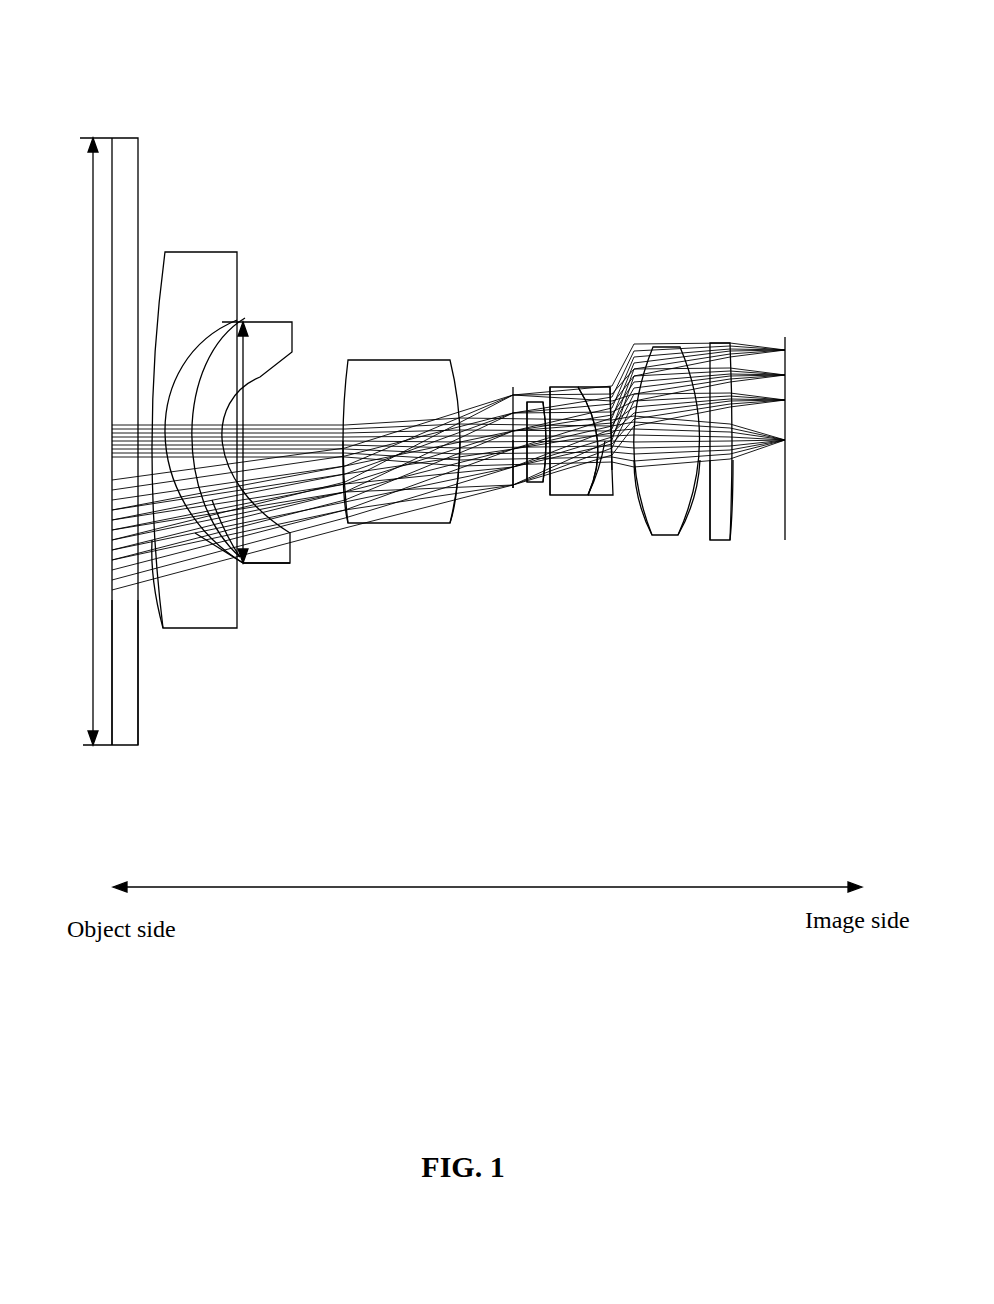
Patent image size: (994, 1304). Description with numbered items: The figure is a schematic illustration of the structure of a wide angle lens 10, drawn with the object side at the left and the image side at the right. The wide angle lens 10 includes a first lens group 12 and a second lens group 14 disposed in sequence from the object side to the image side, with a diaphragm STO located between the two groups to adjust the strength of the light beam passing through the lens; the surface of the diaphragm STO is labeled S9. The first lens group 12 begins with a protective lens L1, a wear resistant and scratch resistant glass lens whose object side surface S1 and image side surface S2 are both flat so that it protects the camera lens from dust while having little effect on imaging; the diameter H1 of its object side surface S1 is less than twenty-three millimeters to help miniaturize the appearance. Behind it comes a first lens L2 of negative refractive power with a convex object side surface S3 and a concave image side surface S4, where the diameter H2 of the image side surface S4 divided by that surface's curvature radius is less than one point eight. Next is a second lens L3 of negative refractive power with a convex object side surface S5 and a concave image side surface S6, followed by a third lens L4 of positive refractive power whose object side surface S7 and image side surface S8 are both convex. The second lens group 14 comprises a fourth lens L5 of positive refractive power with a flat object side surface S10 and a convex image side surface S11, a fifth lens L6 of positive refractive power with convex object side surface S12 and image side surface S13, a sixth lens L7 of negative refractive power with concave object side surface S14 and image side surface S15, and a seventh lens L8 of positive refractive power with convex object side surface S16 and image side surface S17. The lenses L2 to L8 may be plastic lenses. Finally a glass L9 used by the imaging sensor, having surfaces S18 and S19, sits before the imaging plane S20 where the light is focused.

The wide angle lens 10 is at (58, 92).
The first lens group 12 is at (343, 82).
The second lens group 14 is at (695, 150).
The protective lens L1 is at (115, 138).
The first lens L2 is at (197, 252).
The second lens L3 is at (263, 322).
The third lens L4 is at (389, 360).
The fourth lens L5 is at (527, 400).
The fifth lens L6 is at (563, 387).
The sixth lens L7 is at (597, 387).
The seventh lens L8 is at (665, 347).
The glass L9 is at (720, 343).
The diaphragm STO is at (513, 395).
The diameter of the object side surface of the protective lens H1 is at (80, 441).
The diameter of the image side surface of the first lens H2 is at (253, 442).
The object side surface of the protective lens S1 is at (112, 710).
The image side surface of the protective lens S2 is at (138, 662).
The object side surface of the first lens S3 is at (158, 555).
The image side surface of the first lens S4 is at (195, 533).
The object side surface of the second lens S5 is at (212, 500).
The image side surface of the second lens S6 is at (262, 563).
The object side surface of the third lens S7 is at (345, 473).
The image side surface of the third lens S8 is at (452, 520).
The surface of the diaphragm S9 is at (513, 488).
The object side surface of the fourth lens S10 is at (527, 440).
The image side surface of the fourth lens S11 is at (543, 465).
The object side surface of the fifth lens S12 is at (550, 495).
The image side surface of the fifth lens S13 is at (580, 495).
The object side surface of the sixth lens S14 is at (587, 495).
The image side surface of the sixth lens S15 is at (602, 495).
The object side surface of the seventh lens S16 is at (634, 470).
The image side surface of the seventh lens S17 is at (692, 497).
The surface of the glass used in the imaging sensor S18 is at (711, 540).
The surface of the glass used in the imaging sensor S19 is at (731, 485).
The imaging plane S20 is at (785, 540).